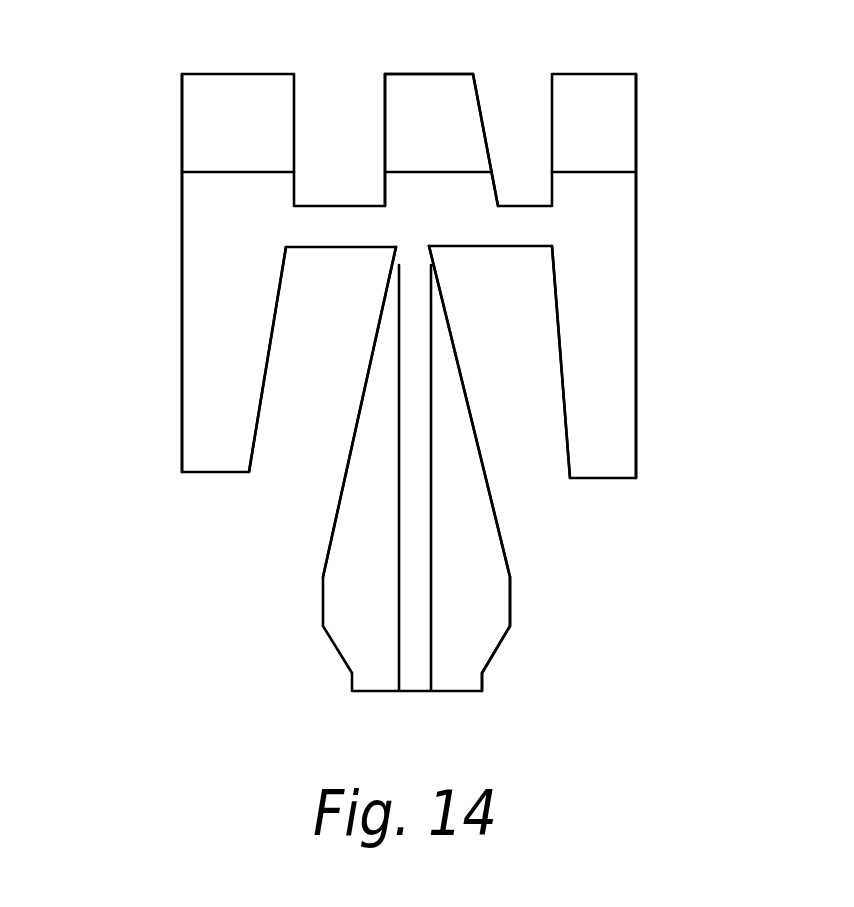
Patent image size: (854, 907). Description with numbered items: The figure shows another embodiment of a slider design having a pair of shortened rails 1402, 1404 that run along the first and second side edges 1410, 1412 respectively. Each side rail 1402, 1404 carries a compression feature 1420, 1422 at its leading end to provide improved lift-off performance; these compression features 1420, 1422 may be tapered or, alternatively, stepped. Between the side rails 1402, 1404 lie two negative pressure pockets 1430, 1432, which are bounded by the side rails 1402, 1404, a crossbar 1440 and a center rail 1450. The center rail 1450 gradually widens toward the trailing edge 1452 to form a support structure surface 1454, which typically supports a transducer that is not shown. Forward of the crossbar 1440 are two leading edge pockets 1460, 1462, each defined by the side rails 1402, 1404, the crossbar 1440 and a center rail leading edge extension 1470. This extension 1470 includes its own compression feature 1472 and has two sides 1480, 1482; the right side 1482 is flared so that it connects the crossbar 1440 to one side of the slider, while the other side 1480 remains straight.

The shortened rail 1402 is at (190, 395).
The shortened rail 1404 is at (617, 297).
The first side edge 1410 is at (167, 272).
The second side edge 1412 is at (662, 398).
The compression feature 1420 is at (193, 92).
The compression feature 1422 is at (628, 93).
The negative pressure pocket 1430 is at (313, 443).
The negative pressure pocket 1432 is at (510, 452).
The crossbar 1440 is at (327, 248).
The center rail 1450 is at (445, 387).
The trailing edge 1452 is at (598, 665).
The support structure surface 1454 is at (480, 600).
The leading edge pocket 1460 is at (343, 73).
The leading edge pocket 1462 is at (512, 72).
The center rail leading edge extension 1470 is at (440, 92).
The compression feature 1472 is at (408, 100).
The side of extension 1480 is at (383, 140).
The right side of extension 1482 is at (490, 158).